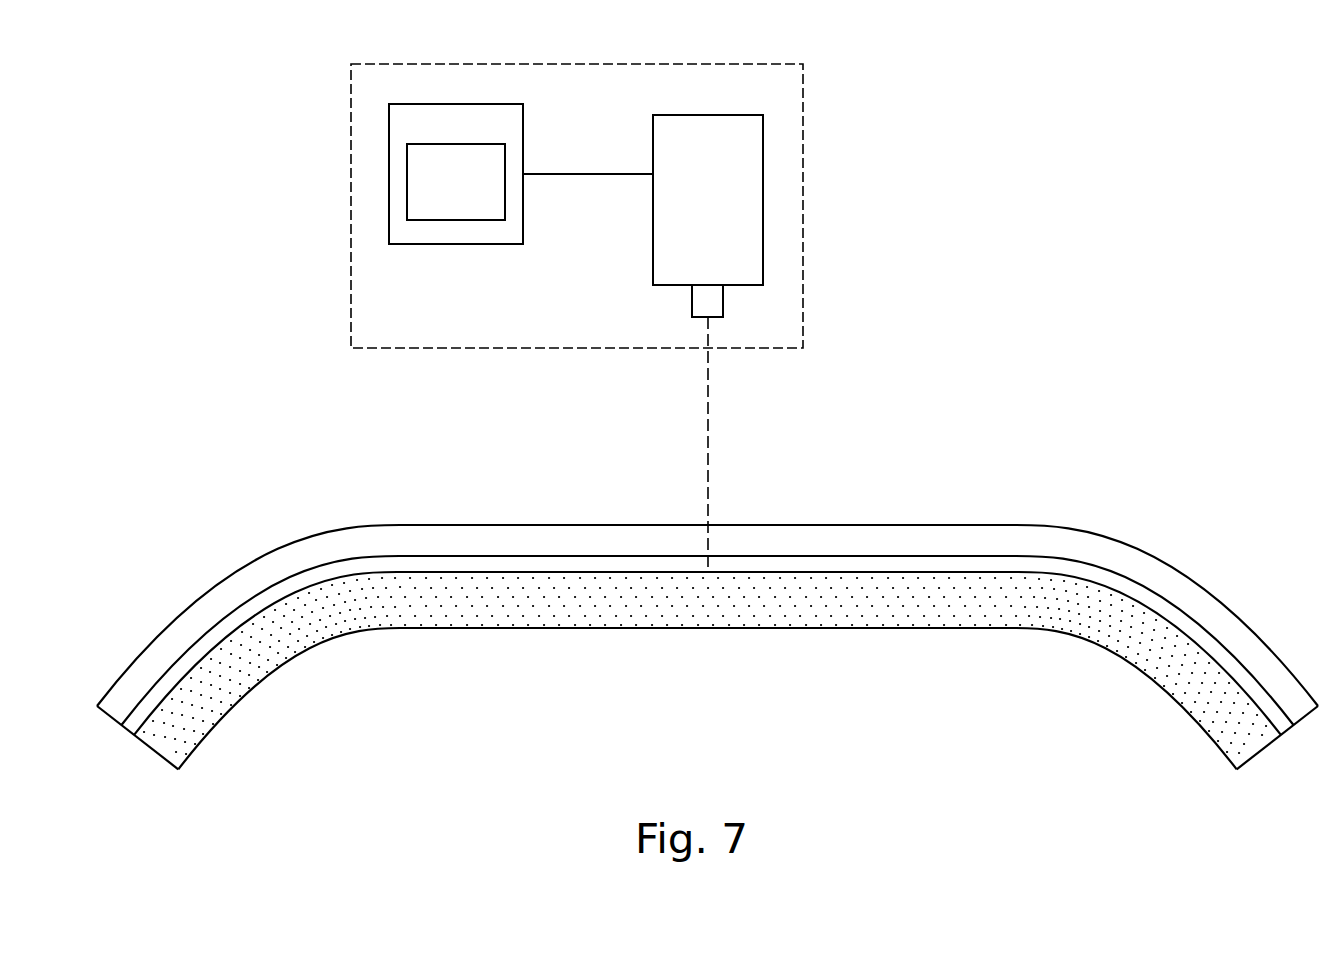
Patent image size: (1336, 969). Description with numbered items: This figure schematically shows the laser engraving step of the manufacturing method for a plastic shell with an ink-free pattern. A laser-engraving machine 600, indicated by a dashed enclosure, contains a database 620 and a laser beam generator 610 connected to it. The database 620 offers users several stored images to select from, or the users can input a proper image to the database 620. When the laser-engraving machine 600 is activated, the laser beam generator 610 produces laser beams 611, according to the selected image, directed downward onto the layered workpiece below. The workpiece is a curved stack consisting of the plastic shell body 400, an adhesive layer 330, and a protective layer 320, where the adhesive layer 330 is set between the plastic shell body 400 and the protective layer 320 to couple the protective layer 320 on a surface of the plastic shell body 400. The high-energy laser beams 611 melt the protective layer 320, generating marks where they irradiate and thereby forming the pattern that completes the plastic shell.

The laser-engraving machine 600 is at (645, 206).
The laser beam generator 610 is at (673, 242).
The laser beams 611 is at (707, 424).
The database 620 is at (477, 160).
The protective layer 320 is at (898, 540).
The adhesive layer 330 is at (1029, 572).
The plastic shell body 400 is at (959, 610).